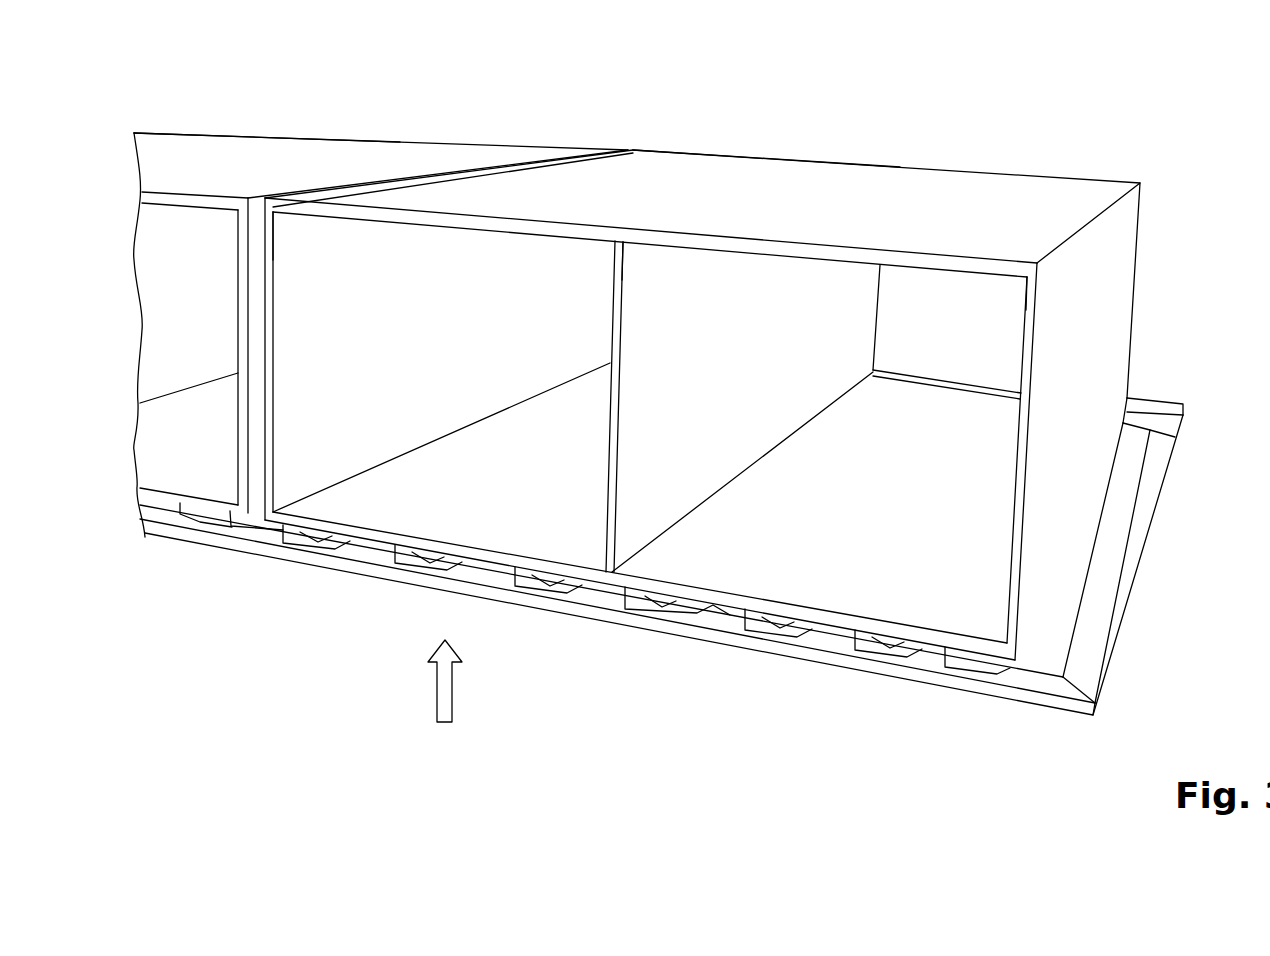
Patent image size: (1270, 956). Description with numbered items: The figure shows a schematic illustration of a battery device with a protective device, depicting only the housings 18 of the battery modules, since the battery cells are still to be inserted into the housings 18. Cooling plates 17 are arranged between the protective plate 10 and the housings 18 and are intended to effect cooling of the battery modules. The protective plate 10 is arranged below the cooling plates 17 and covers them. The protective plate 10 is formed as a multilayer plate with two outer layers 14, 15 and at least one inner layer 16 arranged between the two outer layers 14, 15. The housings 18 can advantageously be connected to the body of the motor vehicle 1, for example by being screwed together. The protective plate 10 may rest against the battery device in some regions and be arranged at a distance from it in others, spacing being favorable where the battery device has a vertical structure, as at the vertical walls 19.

The motor vehicle 1 is at (880, 131).
The protective plate 10 is at (820, 667).
The outer layer 14 is at (988, 700).
The outer layer 15 is at (1050, 672).
The inner layer 16 is at (1033, 693).
The cooling plate 17 is at (193, 528).
The housing 18 is at (393, 147).
The vertical wall 19 is at (278, 250).